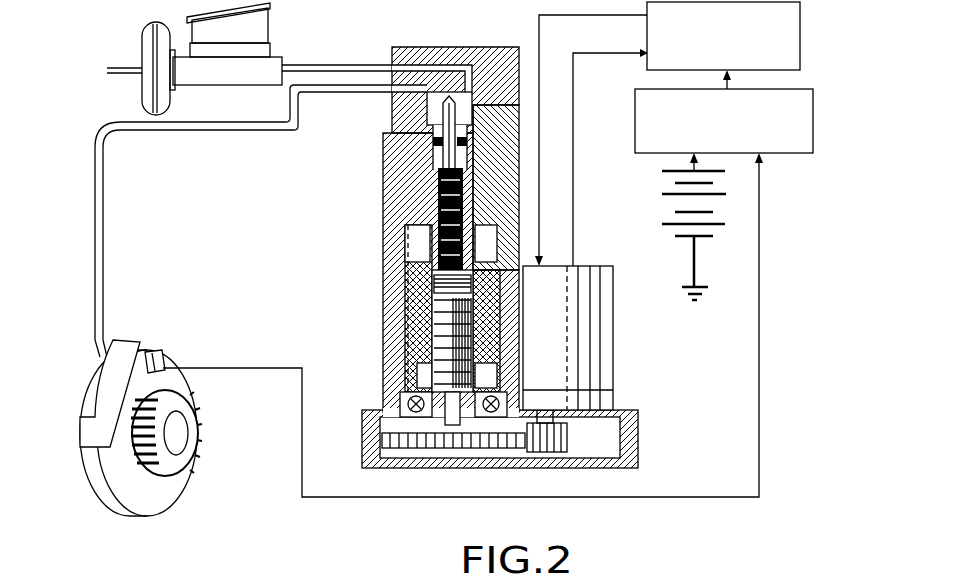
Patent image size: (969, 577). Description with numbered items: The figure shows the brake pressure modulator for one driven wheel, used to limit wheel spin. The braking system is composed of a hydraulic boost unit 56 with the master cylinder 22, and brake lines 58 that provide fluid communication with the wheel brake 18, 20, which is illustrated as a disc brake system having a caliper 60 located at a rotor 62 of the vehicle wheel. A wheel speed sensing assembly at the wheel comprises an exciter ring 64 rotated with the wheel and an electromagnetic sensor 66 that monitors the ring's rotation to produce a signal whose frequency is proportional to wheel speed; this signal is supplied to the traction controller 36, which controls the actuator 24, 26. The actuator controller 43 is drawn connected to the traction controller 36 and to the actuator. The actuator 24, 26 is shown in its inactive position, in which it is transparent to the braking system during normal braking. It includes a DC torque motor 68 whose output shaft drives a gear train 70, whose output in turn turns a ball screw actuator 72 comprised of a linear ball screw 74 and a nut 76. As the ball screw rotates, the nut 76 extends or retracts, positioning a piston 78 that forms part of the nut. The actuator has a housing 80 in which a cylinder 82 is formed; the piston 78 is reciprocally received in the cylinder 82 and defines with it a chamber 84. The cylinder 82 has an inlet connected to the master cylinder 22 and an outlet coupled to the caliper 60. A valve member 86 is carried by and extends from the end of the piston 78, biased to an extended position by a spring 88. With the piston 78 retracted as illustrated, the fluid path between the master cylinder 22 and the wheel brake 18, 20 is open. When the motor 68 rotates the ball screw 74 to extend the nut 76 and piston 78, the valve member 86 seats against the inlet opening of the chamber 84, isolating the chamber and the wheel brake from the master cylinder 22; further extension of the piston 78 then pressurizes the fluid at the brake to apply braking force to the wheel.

The hydraulic boost unit 56 is at (148, 58).
The master cylinder 22 is at (253, 62).
The brake lines 58 is at (223, 129).
The actuator 24 is at (432, 269).
The actuator 26 is at (432, 269).
The chamber 84 is at (466, 85).
The cylinder 82 is at (437, 104).
The valve member 86 is at (452, 116).
The housing 80 is at (494, 158).
The spring 88 is at (487, 188).
The piston 78 is at (382, 188).
The ball screw actuator 72 is at (408, 297).
The linear ball screw 74 is at (445, 346).
The nut 76 is at (385, 383).
The gear train 70 is at (430, 443).
The DC torque motor 68 is at (612, 368).
The traction controller 36 is at (655, 107).
The actuator controller 43 is at (790, 30).
The wheel brake 18 is at (400, 334).
The wheel brake 20 is at (400, 334).
The electromagnetic sensor 66 is at (183, 316).
The exciter ring 64 is at (197, 408).
The rotor 62 is at (143, 488).
The caliper 60 is at (82, 447).